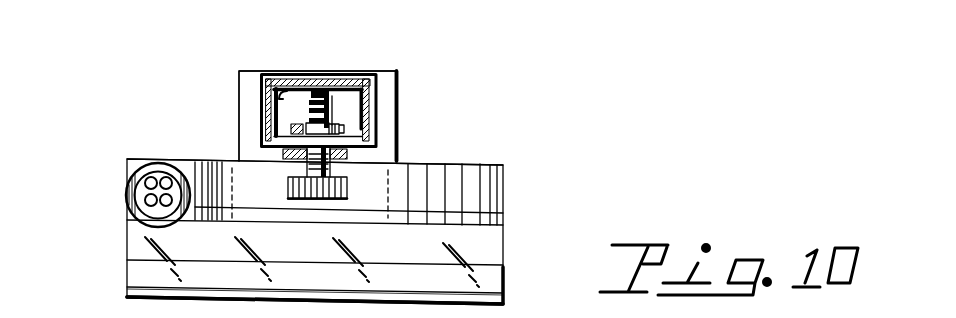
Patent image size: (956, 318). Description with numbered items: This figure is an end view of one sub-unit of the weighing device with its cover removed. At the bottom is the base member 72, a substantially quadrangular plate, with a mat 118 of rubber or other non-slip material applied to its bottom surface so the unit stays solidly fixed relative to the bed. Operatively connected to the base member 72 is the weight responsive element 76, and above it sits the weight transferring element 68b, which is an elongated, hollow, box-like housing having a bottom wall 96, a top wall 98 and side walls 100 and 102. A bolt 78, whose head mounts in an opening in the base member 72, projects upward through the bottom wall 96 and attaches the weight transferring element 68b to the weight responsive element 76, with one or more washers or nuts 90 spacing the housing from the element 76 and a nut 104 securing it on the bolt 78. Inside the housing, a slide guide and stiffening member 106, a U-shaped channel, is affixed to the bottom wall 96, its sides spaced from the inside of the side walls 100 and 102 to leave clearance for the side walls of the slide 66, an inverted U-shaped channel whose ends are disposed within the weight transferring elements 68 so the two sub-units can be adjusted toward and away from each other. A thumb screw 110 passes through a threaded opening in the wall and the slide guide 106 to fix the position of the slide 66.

The slide 66 is at (357, 80).
The weight transferring element 68 is at (318, 116).
The weight transferring element 68b is at (383, 111).
The base member 72 is at (490, 248).
The weight responsive element 76 is at (497, 165).
The bolt 78 is at (332, 104).
The washers or nuts 90 is at (348, 155).
The bottom wall 96 is at (261, 146).
The top wall 98 is at (316, 79).
The side wall 100 is at (276, 92).
The side wall 102 is at (369, 130).
The nut 104 is at (291, 127).
The slide guide and stiffening member 106 is at (297, 89).
The thumb screw 110 is at (289, 185).
The mat 118 is at (127, 290).